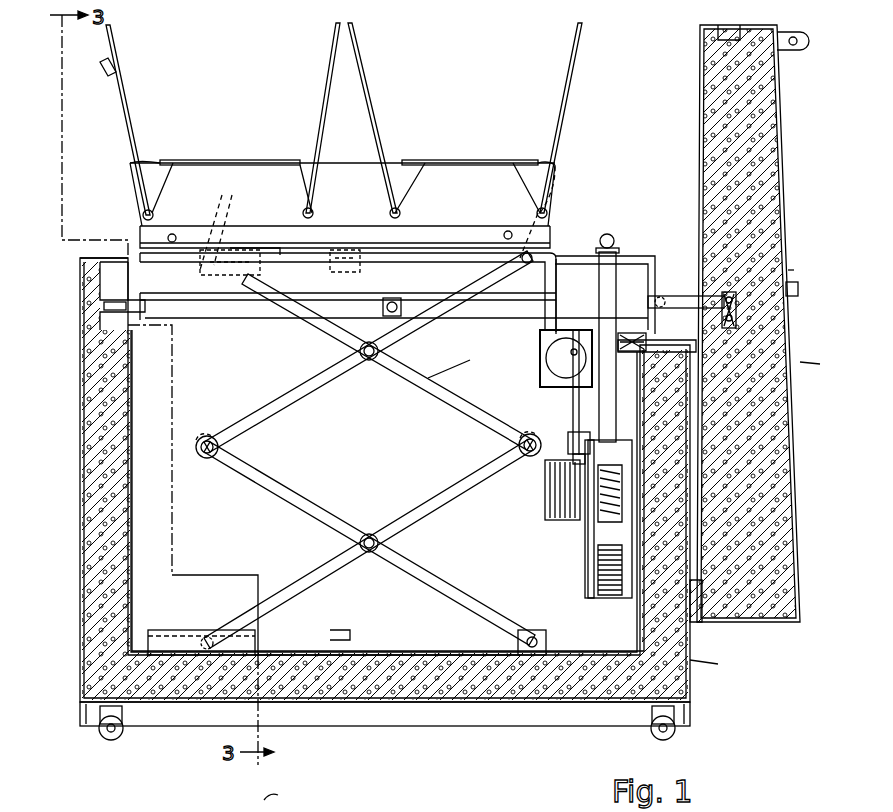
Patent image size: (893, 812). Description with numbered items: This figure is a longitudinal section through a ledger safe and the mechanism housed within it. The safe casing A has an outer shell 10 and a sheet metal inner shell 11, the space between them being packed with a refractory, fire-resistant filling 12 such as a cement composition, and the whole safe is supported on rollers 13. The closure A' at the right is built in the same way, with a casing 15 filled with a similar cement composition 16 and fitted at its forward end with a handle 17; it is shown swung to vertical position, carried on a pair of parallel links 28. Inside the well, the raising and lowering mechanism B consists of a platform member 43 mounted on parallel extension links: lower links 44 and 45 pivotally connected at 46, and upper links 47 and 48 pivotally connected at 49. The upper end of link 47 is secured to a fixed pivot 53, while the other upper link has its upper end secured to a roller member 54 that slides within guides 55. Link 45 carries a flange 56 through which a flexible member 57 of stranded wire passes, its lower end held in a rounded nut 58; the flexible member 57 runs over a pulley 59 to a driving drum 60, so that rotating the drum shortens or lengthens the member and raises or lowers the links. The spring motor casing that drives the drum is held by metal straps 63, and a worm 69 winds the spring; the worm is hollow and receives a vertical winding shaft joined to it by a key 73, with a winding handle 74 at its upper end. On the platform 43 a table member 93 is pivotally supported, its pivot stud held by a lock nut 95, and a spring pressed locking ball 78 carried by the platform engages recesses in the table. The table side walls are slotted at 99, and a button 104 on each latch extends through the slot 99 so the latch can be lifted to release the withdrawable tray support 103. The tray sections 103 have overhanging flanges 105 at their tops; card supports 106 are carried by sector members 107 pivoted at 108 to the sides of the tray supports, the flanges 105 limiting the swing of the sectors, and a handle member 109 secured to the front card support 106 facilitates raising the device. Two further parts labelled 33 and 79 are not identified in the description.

The shell 10 is at (82, 386).
The sheet metal inner shell 11 is at (132, 440).
The filling 12 is at (455, 690).
The rollers 13 is at (113, 740).
The casing 15 is at (793, 410).
The cement composition 16 is at (760, 615).
The handle 17 is at (800, 30).
The parallel links 28 is at (625, 298).
The pivot 33 is at (660, 304).
The platform member 43 is at (560, 252).
The lower link 44 is at (300, 485).
The lower link 45 is at (440, 488).
The pivot 46 is at (369, 535).
The upper link 47 is at (286, 380).
The upper link 48 is at (405, 364).
The pivot 49 is at (369, 360).
The fixed pivot 53 is at (550, 178).
The roller member 54 is at (230, 235).
The guides 55 is at (216, 221).
The flange 56 is at (566, 430).
The flexible member 57 is at (582, 416).
The rounded nut 58 is at (570, 462).
The pulley 59 is at (548, 378).
The driving drum 60 is at (548, 498).
The metal straps 63 is at (590, 555).
The worm 69 is at (605, 500).
The key 73 is at (652, 344).
The winding handle 74 is at (612, 240).
The spring pressed locking ball 78 is at (250, 248).
The deck 79 is at (290, 238).
The table member 93 is at (415, 228).
The lock nut 95 is at (365, 266).
The slot 99 is at (168, 238).
The withdrawable tray support 103 is at (222, 178).
The button 104 is at (177, 222).
The overhanging flanges 105 is at (190, 162).
The card supports 106 is at (123, 100).
The sector members 107 is at (152, 182).
The pivot 108 is at (143, 212).
The handle member 109 is at (108, 74).